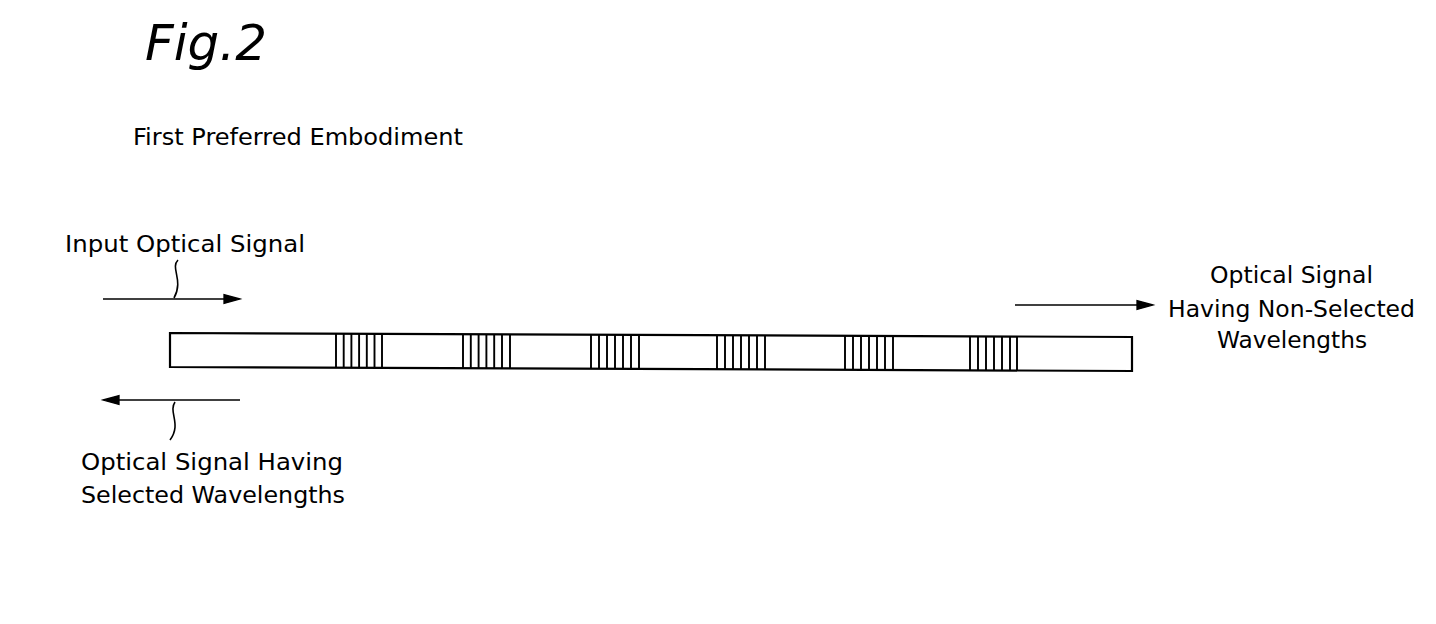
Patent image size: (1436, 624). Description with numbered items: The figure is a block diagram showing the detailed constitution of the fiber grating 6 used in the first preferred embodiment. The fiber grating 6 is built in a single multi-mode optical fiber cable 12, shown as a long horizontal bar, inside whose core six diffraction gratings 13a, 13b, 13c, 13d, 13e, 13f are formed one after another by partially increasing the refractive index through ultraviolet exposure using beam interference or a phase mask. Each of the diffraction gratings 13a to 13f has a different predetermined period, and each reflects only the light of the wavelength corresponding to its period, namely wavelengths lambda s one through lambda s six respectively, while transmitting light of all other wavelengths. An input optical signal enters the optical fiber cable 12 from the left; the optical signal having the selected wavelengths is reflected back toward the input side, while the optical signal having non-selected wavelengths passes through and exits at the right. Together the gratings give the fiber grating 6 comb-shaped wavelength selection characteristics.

The fiber grating 6 is at (665, 206).
The multi-mode optical fiber cable 12 is at (285, 348).
The diffraction grating 13a is at (358, 332).
The diffraction grating 13b is at (488, 332).
The diffraction grating 13c is at (613, 332).
The diffraction grating 13d is at (742, 332).
The diffraction grating 13e is at (867, 332).
The diffraction grating 13f is at (993, 337).